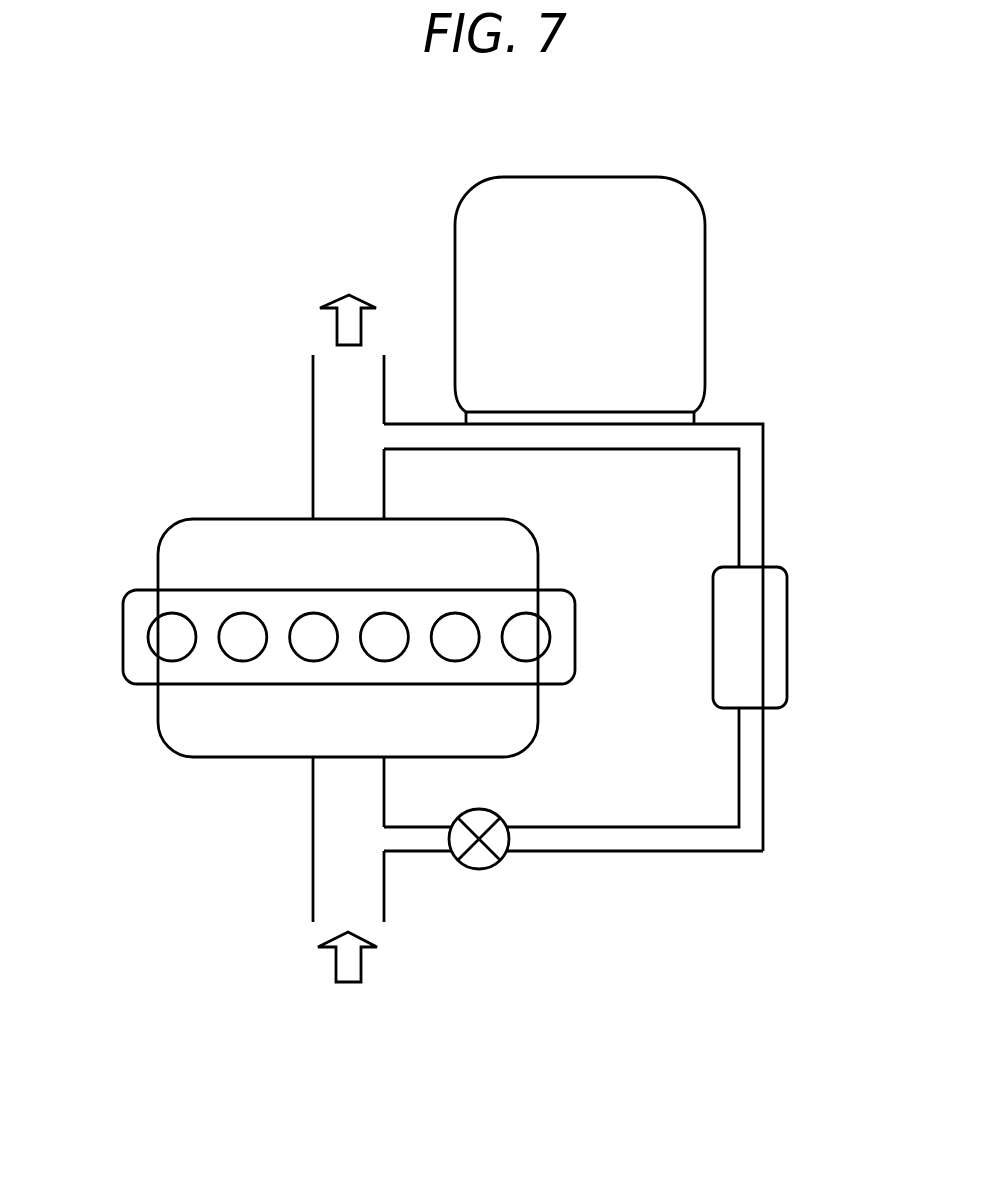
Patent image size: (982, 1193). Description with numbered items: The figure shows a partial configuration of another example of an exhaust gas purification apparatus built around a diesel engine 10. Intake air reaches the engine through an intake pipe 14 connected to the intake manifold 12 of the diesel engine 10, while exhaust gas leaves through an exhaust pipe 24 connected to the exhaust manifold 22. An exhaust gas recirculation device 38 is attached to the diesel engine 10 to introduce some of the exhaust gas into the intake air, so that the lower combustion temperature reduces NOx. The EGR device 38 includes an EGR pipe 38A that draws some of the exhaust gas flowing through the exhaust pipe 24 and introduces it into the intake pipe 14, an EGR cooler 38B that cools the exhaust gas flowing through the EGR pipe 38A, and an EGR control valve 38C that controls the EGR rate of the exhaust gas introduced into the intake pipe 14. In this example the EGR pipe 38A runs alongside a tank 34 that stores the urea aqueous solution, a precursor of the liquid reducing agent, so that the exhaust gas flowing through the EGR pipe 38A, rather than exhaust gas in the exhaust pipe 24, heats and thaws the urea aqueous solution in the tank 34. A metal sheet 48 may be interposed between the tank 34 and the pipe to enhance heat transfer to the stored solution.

The diesel engine 10 is at (122, 600).
The intake manifold 12 is at (178, 757).
The intake pipe 14 is at (312, 885).
The exhaust manifold 22 is at (183, 520).
The exhaust pipe 24 is at (313, 402).
The tank 34 is at (705, 210).
The exhaust gas recirculation (EGR) device 38 is at (783, 452).
The EGR pipe 38A is at (766, 803).
The EGR cooler 38B is at (788, 585).
The EGR control valve 38C is at (499, 860).
The metal sheet 48 is at (618, 420).